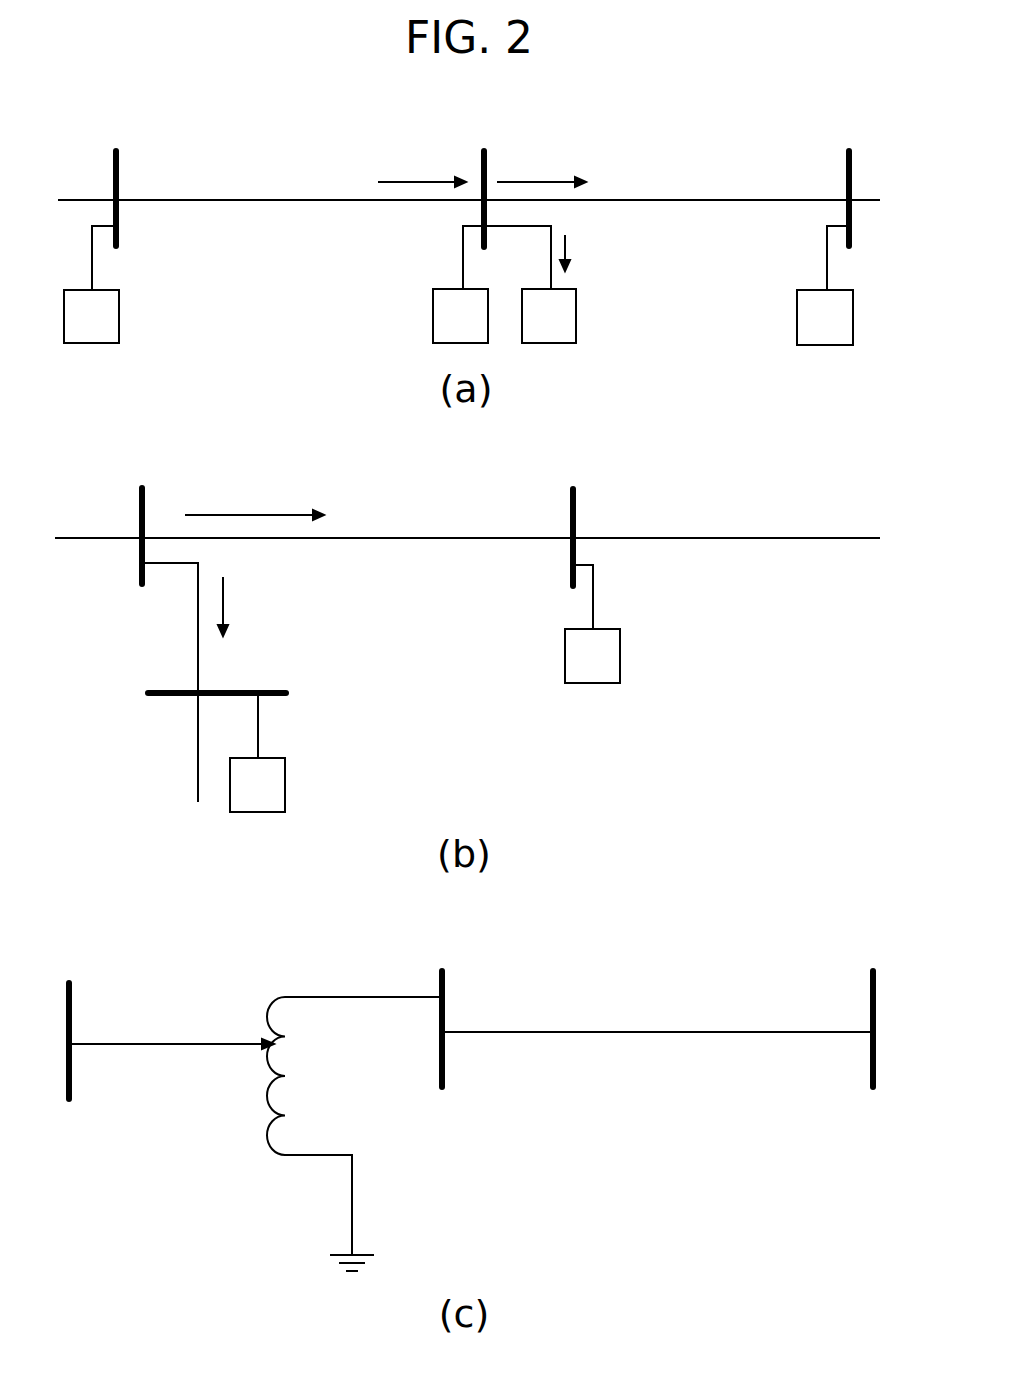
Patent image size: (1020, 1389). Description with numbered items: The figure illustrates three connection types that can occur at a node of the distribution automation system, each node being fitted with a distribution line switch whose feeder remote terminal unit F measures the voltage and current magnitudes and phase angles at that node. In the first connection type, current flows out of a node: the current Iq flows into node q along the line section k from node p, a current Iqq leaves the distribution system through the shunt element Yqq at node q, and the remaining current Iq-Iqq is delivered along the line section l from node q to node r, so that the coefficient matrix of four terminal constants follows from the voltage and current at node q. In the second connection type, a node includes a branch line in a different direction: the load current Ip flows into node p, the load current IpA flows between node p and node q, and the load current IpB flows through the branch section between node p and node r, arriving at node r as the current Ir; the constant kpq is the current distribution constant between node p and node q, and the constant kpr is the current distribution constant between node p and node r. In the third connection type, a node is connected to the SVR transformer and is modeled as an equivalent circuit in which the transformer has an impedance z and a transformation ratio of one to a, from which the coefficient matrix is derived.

The node p is at (106, 597).
The node q is at (679, 591).
The node r is at (481, 402).
The line section k is at (271, 624).
The line section l is at (682, 350).
The current distribution constant between node p and node q kpq is at (314, 516).
The current distribution constant between node p and node r kpr is at (170, 682).
The feeder remote terminal unit F is at (458, 519).
The shunt admittance at node q Yqq is at (549, 316).
The current flowing into node q Iq is at (499, 324).
The current delivered from node q to node r Iq-Iqq is at (541, 164).
The current flowing out of the distribution system Iqq is at (589, 253).
The load current flowing into node p Ip is at (106, 497).
The load current between node p and node q IpA is at (254, 499).
The load current between node p and node r IpB is at (245, 606).
The current at node r Ir is at (171, 669).
The transformation ratio of the transformer a is at (255, 1104).
The impedance of the transformer z is at (657, 1006).